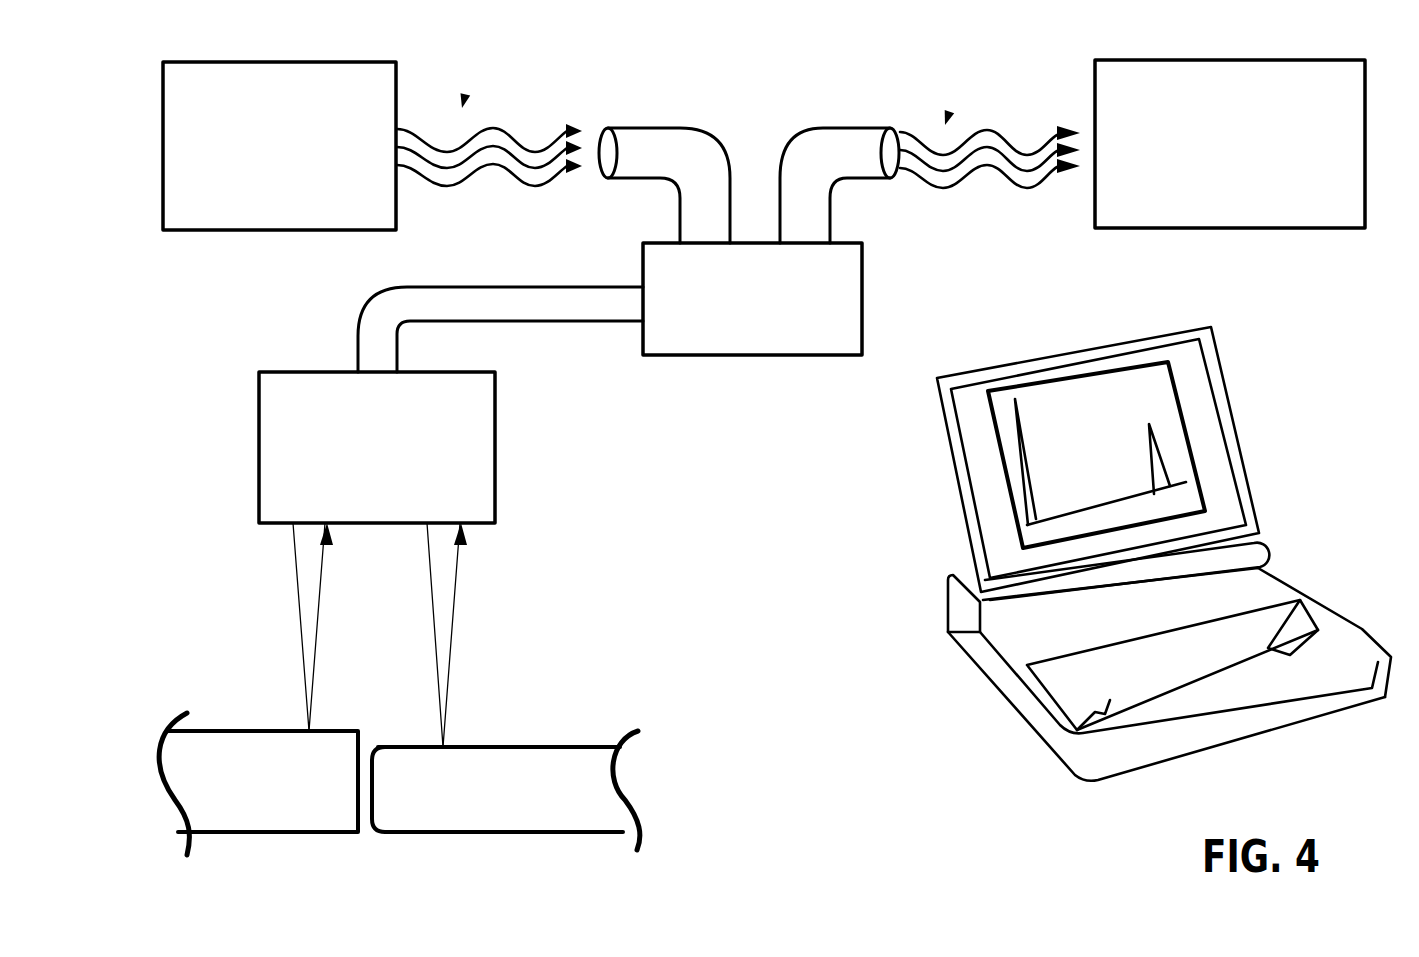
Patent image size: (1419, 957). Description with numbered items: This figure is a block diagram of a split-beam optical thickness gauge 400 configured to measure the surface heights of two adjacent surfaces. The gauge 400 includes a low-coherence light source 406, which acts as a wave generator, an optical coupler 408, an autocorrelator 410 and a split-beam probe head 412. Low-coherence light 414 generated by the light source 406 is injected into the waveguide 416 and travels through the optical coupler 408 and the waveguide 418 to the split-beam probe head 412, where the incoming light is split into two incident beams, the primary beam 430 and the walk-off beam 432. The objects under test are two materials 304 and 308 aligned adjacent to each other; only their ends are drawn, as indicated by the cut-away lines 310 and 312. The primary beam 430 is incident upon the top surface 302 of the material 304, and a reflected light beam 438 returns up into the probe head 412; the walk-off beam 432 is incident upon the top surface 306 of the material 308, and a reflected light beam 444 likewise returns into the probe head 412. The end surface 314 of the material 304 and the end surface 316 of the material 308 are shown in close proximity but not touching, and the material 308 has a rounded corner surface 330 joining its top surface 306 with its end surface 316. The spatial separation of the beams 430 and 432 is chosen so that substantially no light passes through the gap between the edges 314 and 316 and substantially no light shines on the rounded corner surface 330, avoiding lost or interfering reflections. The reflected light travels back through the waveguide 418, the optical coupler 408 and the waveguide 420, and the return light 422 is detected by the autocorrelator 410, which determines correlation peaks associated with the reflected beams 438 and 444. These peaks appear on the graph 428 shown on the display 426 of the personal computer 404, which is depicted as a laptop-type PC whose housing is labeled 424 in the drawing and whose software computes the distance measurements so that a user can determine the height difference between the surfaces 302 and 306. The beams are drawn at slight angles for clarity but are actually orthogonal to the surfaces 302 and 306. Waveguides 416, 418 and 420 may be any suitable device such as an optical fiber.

The split-beam optical thickness gauge 400 is at (937, 247).
The personal computer 404 is at (982, 674).
The low-coherence light source 406 is at (381, 216).
The optical coupler 408 is at (842, 339).
The autocorrelator 410 is at (1349, 214).
The split-beam probe head 412 is at (479, 507).
The low-coherence light 414 is at (462, 108).
The waveguide 416 is at (643, 128).
The waveguide 418 is at (513, 287).
The waveguide 420 is at (828, 128).
The return light 422 is at (945, 125).
The computer housing 424 is at (1163, 554).
The display 426 is at (1142, 442).
The graph 428 is at (1152, 470).
The primary beam 430 is at (302, 663).
The walk-off beam 432 is at (435, 647).
The reflected light beam 438 is at (320, 627).
The reflected light beam 444 is at (447, 667).
The top surface 302 is at (278, 733).
The material 304 is at (240, 784).
The top surface 306 is at (607, 818).
The material 308 is at (537, 790).
The cut-away line 310 is at (158, 764).
The cut-away line 312 is at (627, 798).
The end surface 314 is at (357, 800).
The end surface 316 is at (375, 795).
The rounded corner surface 330 is at (380, 750).